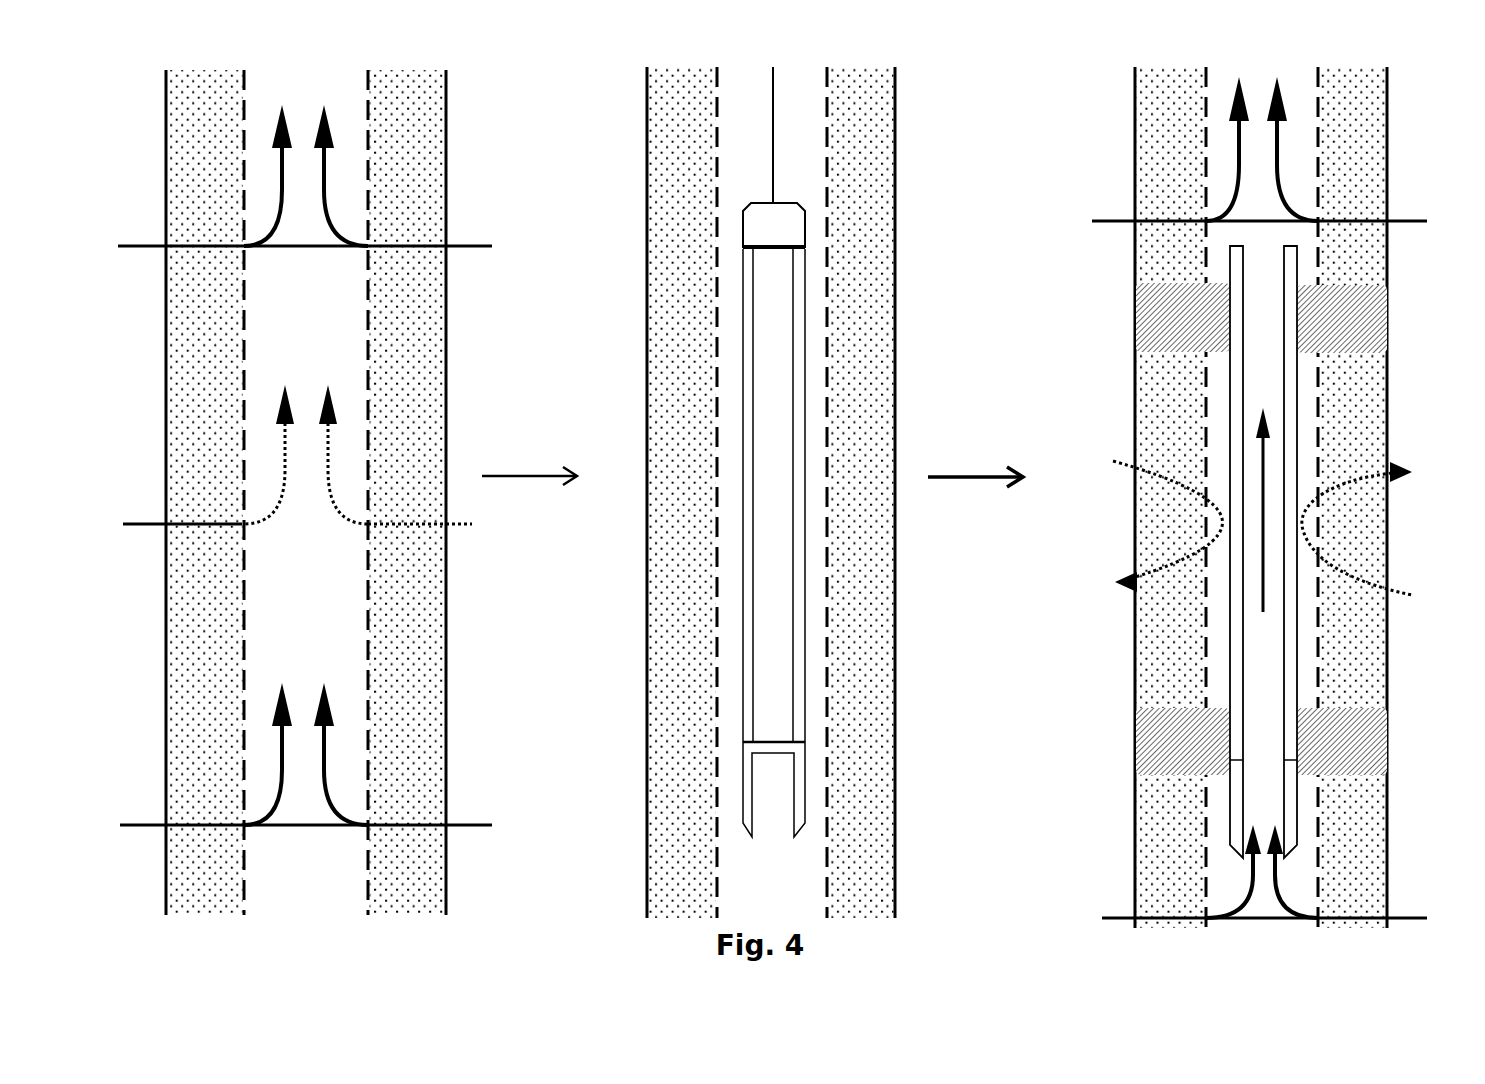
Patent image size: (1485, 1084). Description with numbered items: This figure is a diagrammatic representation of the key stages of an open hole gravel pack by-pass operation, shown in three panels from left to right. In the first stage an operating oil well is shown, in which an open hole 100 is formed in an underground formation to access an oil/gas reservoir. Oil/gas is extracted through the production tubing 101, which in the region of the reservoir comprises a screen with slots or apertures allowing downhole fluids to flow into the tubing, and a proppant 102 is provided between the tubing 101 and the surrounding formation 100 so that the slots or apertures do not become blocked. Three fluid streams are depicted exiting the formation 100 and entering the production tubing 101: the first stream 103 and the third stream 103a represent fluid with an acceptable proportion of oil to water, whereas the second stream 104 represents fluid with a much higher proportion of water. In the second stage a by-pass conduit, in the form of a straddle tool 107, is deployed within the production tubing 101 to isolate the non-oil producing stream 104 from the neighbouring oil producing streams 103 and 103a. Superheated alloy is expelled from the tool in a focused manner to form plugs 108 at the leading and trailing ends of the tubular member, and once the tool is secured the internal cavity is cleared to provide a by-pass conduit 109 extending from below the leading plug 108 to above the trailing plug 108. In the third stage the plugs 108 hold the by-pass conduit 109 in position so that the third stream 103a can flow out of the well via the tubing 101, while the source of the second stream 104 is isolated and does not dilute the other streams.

The open hole 100 is at (448, 203).
The production tubing 101 is at (366, 128).
The proppant 102 is at (425, 745).
The first stream 103 is at (465, 257).
The third stream 103a is at (467, 828).
The second stream 104 is at (468, 532).
The straddle tool 107 is at (796, 188).
The plugs 108 is at (1150, 300).
The by-pass conduit 109 is at (1298, 435).